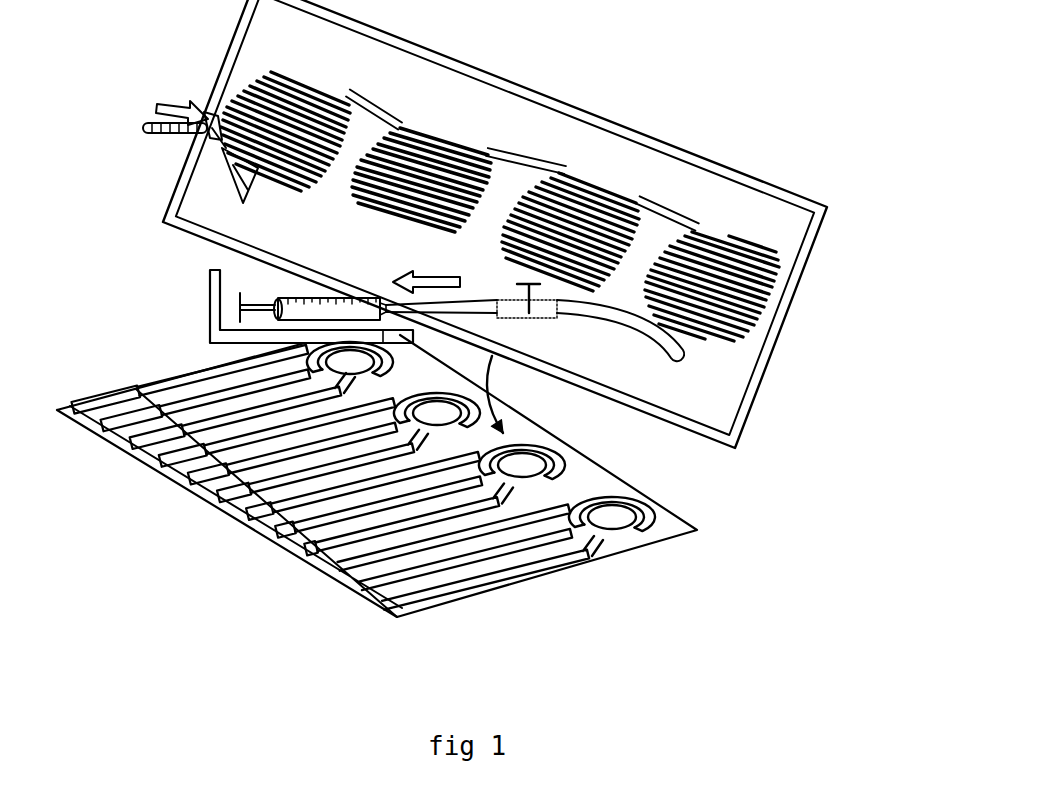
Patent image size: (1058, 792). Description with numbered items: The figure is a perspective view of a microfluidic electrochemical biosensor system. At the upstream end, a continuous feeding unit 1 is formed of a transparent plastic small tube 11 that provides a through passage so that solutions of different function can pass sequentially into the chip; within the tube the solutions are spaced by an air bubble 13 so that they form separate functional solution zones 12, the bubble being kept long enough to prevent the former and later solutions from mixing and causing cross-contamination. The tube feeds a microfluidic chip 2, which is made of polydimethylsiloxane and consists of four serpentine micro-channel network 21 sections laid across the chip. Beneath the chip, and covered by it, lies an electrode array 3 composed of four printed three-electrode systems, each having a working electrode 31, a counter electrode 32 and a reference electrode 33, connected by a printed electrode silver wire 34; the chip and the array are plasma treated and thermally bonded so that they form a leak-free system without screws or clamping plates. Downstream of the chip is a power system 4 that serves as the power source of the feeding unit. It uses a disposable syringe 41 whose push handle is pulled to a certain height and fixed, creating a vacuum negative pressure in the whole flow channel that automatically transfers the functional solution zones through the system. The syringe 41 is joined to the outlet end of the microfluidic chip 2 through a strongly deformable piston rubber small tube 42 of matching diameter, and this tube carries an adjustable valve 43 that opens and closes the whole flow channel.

The continuous feeding unit 1 is at (137, 120).
The transparent plastic small tube 11 is at (207, 117).
The functional solution zones 12 is at (220, 148).
The air bubble 13 is at (190, 142).
The microfluidic chip 2 is at (602, 113).
The micro-channel network 21 is at (778, 268).
The power system 4 is at (278, 283).
The disposable syringe 41 is at (318, 297).
The piston rubber small tube 42 is at (543, 310).
The adjustable valve 43 is at (520, 295).
The electrode array 3 is at (323, 560).
The working electrode 31 is at (637, 512).
The counter electrode 32 is at (612, 500).
The reference electrode 33 is at (656, 521).
The printed electrode silver wire 34 is at (207, 482).